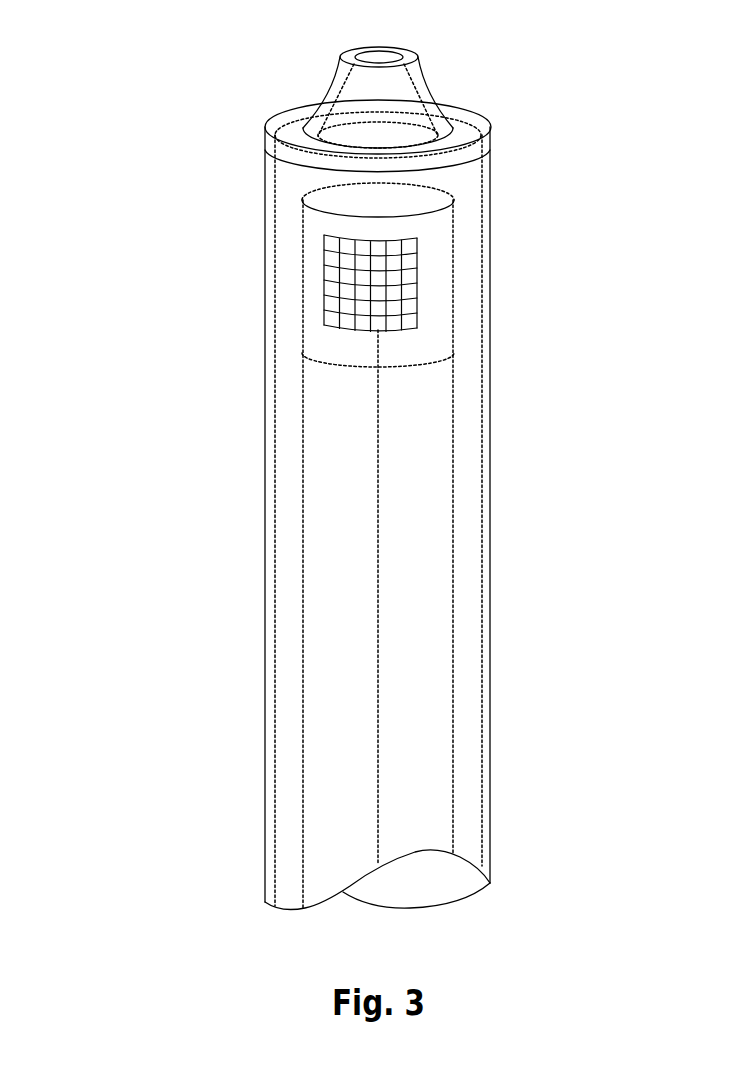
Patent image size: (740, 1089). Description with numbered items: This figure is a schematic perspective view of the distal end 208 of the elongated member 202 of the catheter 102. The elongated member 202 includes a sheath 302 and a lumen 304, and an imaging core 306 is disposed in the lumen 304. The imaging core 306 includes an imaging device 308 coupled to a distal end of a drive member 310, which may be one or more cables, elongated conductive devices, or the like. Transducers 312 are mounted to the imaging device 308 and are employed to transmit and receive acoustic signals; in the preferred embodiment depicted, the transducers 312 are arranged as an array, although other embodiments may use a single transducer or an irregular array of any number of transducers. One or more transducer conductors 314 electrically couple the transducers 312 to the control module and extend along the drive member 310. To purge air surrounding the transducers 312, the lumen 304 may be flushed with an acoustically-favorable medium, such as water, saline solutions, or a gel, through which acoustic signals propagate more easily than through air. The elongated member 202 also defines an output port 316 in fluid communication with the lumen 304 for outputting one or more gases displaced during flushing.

The catheter 102 is at (79, 122).
The elongated member 202 is at (193, 198).
The distal end 208 is at (135, 432).
The sheath 302 is at (487, 662).
The lumen 304 is at (292, 617).
The imaging core 306 is at (463, 480).
The imaging device 308 is at (318, 335).
The drive member 310 is at (322, 497).
The transducers 312 is at (427, 287).
The transducer conductors 314 is at (378, 748).
The output port 316 is at (418, 85).